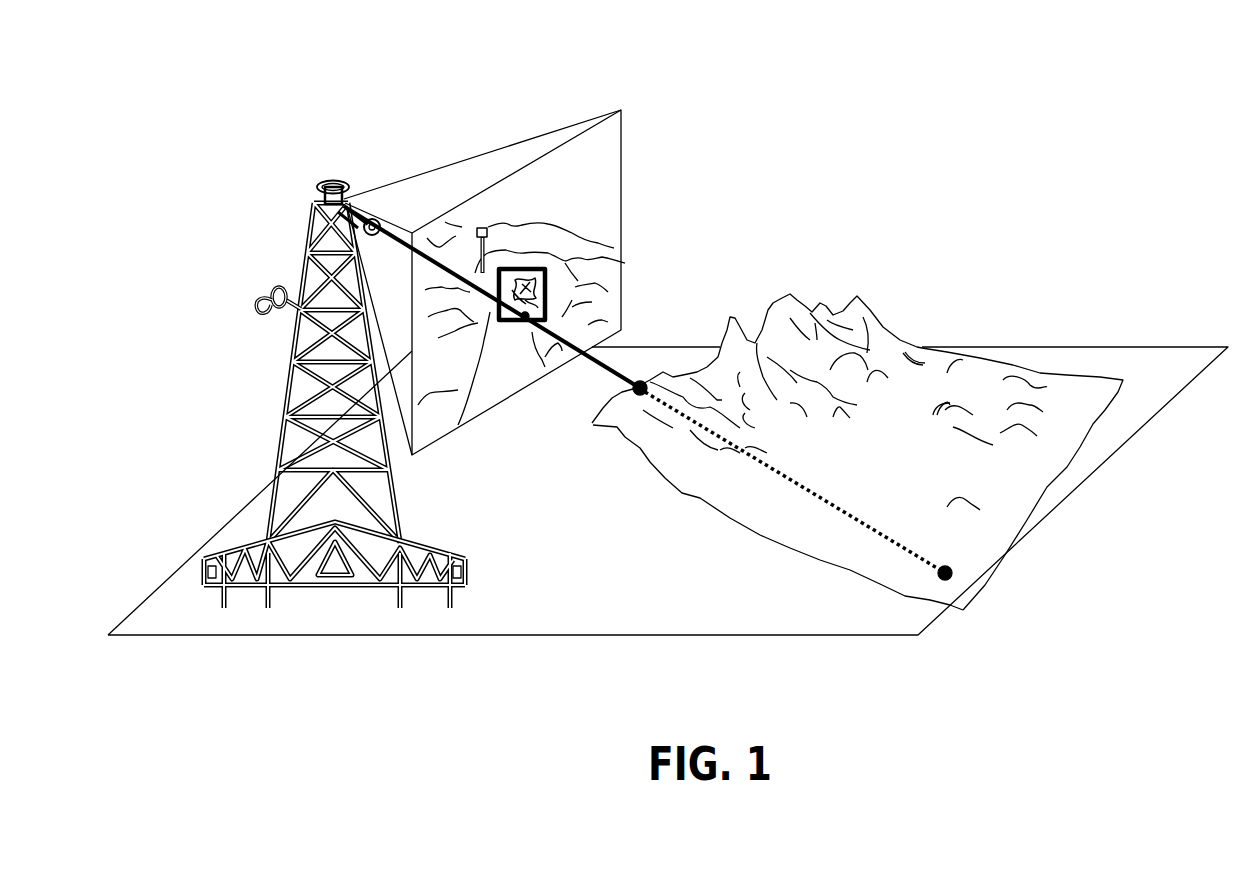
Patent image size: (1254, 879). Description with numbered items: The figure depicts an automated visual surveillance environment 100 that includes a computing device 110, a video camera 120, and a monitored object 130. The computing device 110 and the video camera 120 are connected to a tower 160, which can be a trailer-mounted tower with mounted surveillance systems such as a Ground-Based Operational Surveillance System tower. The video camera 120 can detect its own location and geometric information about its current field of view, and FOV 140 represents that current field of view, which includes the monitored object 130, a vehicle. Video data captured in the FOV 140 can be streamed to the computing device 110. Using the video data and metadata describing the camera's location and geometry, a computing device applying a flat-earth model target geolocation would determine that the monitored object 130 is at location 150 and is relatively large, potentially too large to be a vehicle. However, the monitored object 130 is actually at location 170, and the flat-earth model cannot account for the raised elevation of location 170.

The automated visual surveillance environment 100 is at (1086, 116).
The computing device 110 is at (257, 542).
The video camera 120 is at (318, 184).
The monitored object 130 is at (641, 384).
The FOV 140 is at (622, 151).
The location 150 is at (944, 578).
The tower 160 is at (290, 395).
The location 170 is at (647, 383).